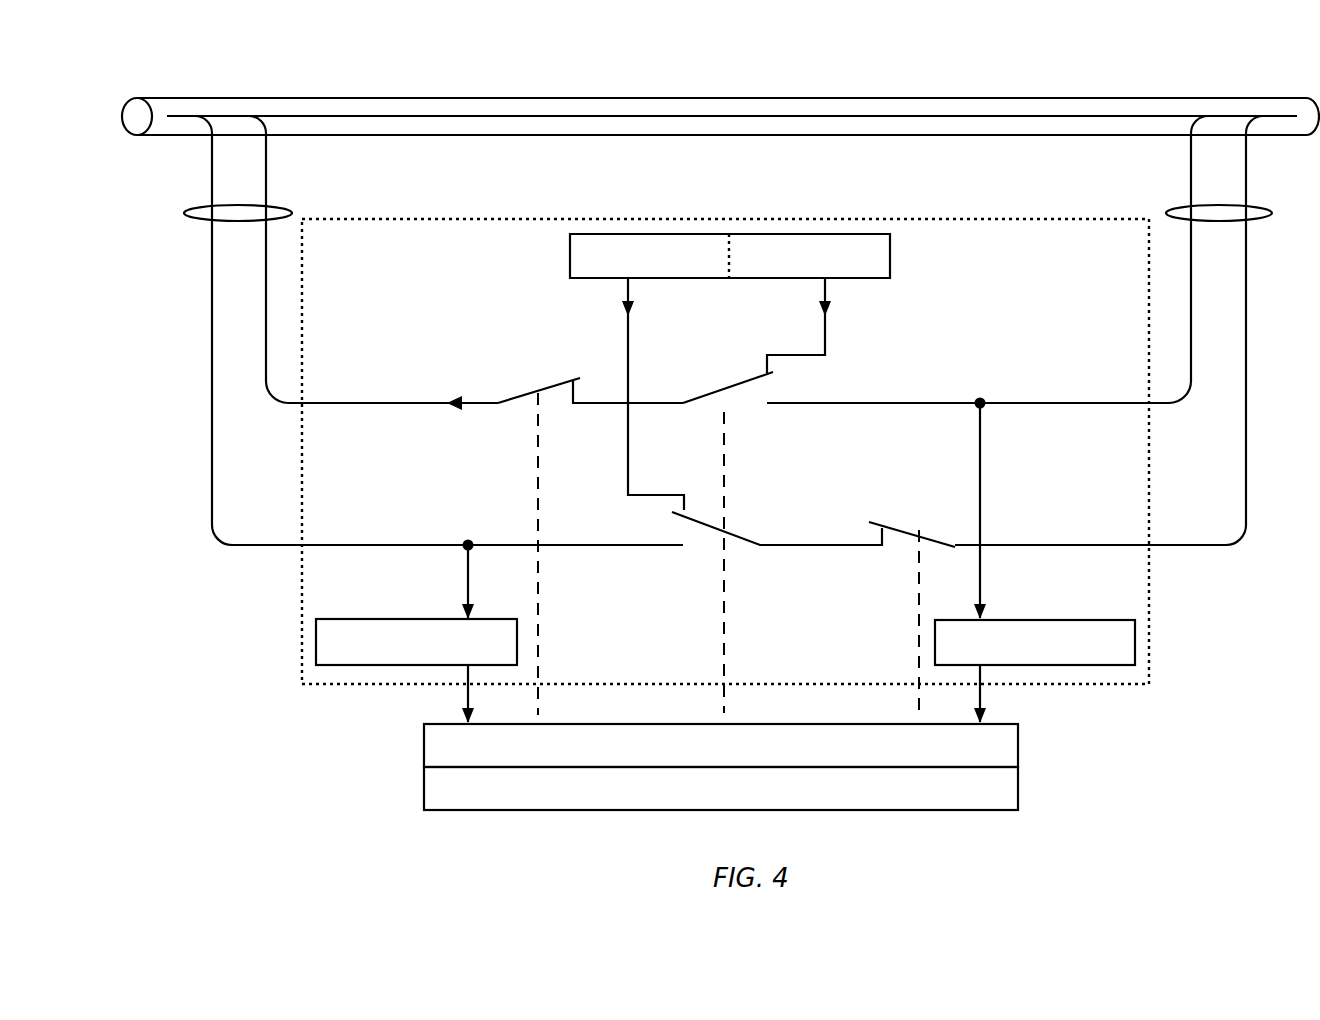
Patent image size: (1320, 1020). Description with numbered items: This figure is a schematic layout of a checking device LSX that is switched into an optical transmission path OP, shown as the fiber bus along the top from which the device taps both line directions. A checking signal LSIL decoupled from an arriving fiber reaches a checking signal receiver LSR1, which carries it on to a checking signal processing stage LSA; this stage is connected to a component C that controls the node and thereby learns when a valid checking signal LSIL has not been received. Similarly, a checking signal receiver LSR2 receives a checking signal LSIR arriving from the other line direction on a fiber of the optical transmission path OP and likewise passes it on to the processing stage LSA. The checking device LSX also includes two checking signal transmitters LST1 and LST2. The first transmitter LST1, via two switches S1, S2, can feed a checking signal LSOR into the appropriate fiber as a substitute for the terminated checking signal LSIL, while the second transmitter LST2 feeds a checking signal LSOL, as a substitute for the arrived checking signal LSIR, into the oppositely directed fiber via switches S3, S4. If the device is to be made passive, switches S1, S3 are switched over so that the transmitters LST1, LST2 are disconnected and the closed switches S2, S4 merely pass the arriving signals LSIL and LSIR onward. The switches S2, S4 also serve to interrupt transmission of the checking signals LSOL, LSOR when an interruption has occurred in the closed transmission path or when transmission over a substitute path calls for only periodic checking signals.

The optical transmission path OP is at (1048, 110).
The checking device LSX is at (725, 435).
The first checking signal transmitter LST1 is at (615, 255).
The second checking signal transmitter LST2 is at (815, 253).
The checking signal LSOL is at (343, 402).
The checking signal LSIR is at (1048, 403).
The checking signal LSIL is at (213, 553).
The checking signal LSOR is at (1240, 543).
The switch S1 is at (708, 528).
The switch S2 is at (900, 532).
The switch S3 is at (742, 385).
The switch S4 is at (521, 404).
The checking signal receiver LSR1 is at (377, 648).
The checking signal receiver LSR2 is at (1102, 652).
The checking signal processing stage LSA is at (721, 745).
The component C is at (582, 790).